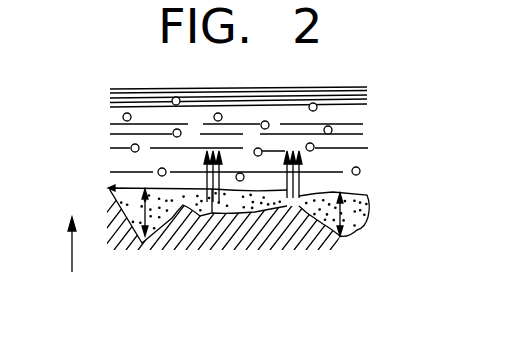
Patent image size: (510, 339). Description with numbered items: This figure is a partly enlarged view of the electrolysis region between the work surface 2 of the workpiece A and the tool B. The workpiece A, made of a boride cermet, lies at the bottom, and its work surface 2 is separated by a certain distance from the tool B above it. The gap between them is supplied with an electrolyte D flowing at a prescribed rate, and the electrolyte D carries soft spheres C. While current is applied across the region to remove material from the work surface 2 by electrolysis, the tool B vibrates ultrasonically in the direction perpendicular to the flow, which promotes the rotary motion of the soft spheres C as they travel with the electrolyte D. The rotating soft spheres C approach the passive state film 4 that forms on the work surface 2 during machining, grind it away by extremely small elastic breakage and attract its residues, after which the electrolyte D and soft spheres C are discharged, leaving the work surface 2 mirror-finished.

The tool B is at (130, 97).
The soft spheres C is at (110, 111).
The electrolyte D is at (127, 151).
The work surface 2 is at (182, 204).
The passive state film 4 is at (335, 192).
The workpiece A is at (288, 232).